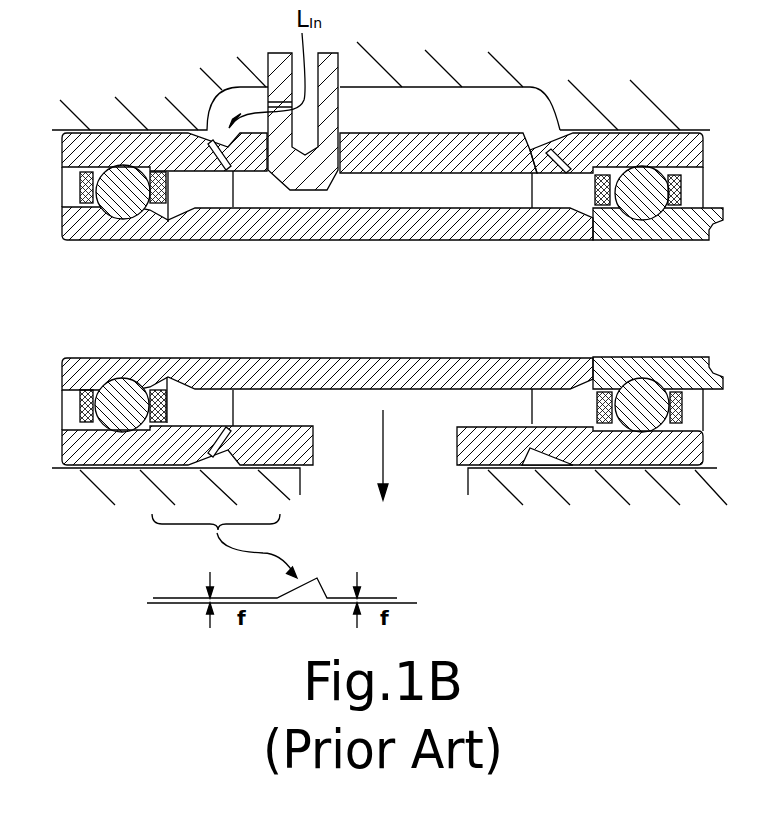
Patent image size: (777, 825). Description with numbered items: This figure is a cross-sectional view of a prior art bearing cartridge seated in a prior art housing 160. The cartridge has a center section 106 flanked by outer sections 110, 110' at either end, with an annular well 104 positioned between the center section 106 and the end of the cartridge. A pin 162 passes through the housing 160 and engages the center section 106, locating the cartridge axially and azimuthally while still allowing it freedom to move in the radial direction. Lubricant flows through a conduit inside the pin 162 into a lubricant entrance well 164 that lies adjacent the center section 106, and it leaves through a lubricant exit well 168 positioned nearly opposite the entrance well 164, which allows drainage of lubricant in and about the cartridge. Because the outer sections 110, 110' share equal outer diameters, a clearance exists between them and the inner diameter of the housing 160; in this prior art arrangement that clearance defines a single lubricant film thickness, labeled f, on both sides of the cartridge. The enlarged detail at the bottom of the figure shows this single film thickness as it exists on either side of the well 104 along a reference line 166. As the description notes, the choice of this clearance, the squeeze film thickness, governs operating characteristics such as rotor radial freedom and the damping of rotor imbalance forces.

The annular well 104 is at (319, 577).
The center section 106 is at (452, 163).
The outer section 110 is at (187, 299).
The outer section 110' is at (580, 299).
The housing 160 is at (535, 47).
The pin 162 is at (333, 180).
The lubricant entrance well 164 is at (427, 125).
The substrate 166 is at (417, 603).
The lubricant exit well 168 is at (442, 494).